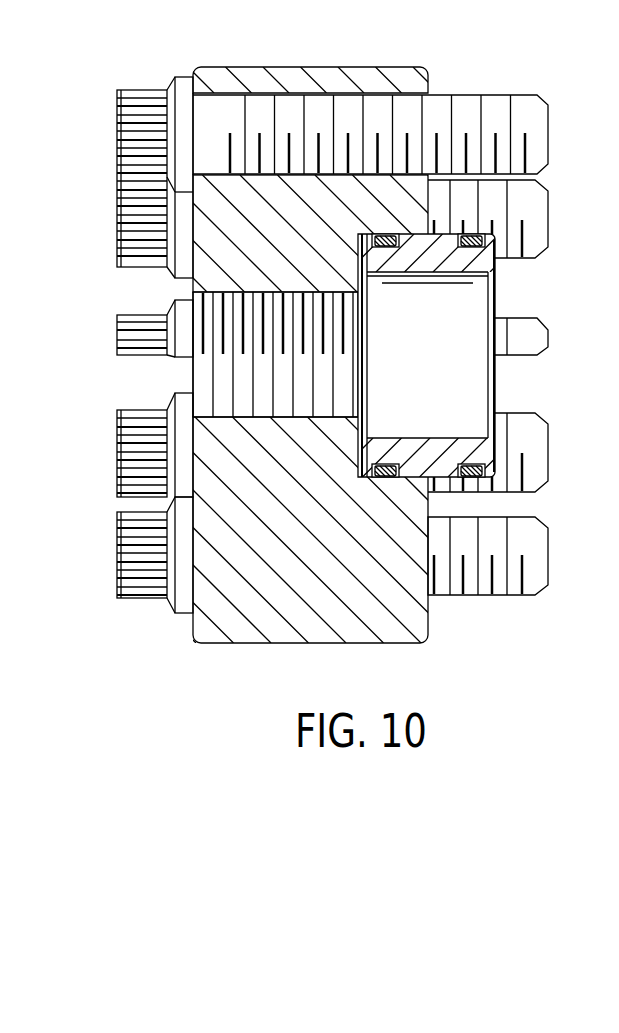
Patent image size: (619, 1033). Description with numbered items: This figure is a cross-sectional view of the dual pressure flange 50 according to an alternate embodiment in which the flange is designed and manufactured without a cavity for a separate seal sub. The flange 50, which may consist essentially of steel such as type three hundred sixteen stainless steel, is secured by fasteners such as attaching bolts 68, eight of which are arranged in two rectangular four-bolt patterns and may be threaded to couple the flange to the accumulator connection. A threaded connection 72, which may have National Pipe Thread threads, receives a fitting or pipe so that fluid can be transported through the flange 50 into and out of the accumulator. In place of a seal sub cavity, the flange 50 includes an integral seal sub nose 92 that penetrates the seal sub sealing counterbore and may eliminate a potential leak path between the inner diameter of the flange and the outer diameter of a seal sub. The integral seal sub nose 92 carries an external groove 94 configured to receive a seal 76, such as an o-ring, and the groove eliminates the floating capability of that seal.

The dual pressure flange 50 is at (400, 67).
The attaching bolts 68 is at (549, 220).
The threaded connection 72 is at (222, 372).
The first seal 76 is at (478, 477).
The integral seal sub nose 92 is at (461, 438).
The external groove 94 is at (493, 290).